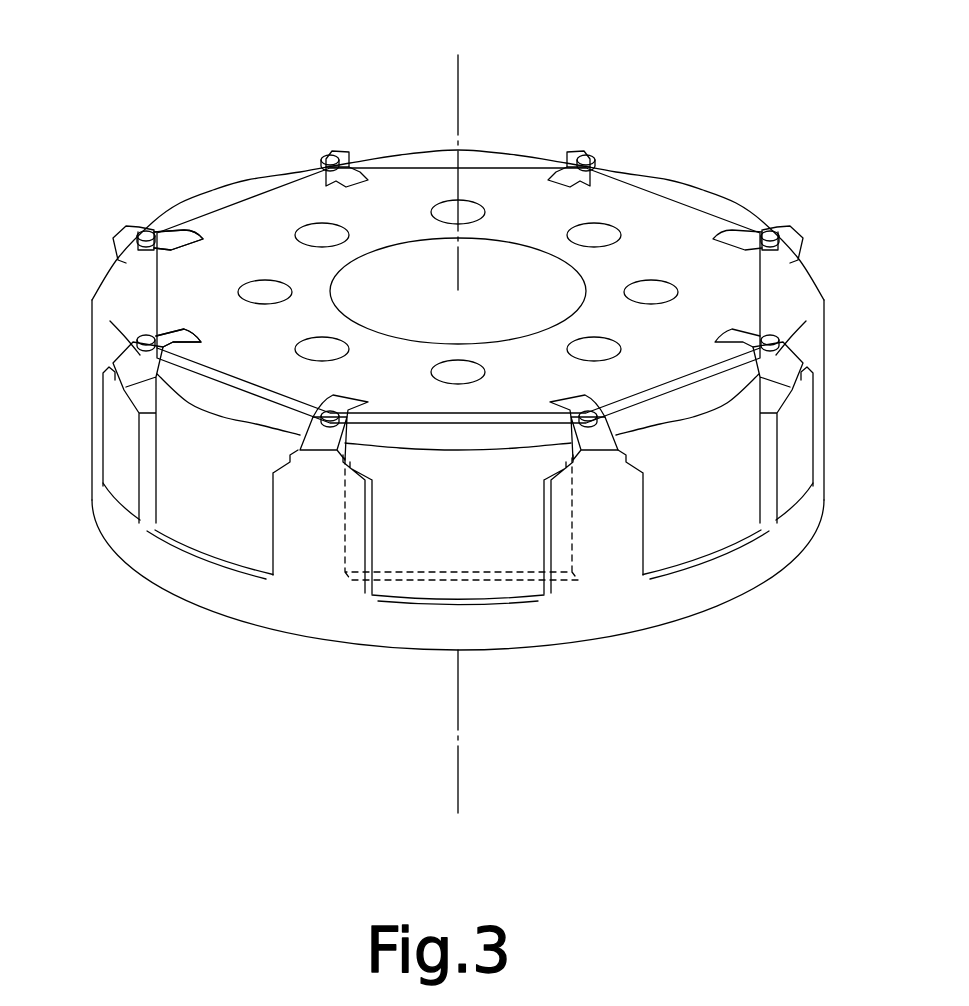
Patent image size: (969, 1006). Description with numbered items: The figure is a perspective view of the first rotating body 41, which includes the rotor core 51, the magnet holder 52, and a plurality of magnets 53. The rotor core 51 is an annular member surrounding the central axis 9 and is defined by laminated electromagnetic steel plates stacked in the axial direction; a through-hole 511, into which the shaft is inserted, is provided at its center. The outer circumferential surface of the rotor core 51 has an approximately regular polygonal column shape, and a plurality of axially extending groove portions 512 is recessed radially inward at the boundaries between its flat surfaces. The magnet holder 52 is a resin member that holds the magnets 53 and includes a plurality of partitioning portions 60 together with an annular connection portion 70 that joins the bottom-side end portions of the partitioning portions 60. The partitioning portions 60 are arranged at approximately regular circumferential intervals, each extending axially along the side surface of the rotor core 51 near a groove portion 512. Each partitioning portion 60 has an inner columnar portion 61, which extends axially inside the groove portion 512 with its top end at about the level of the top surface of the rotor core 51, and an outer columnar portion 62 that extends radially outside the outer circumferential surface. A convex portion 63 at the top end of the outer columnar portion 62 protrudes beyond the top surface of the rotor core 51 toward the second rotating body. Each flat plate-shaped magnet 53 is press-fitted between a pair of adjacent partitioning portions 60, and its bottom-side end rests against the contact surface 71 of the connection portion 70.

The central axis 9 is at (457, 90).
The first rotating body 41 is at (330, 116).
The rotor core 51 is at (429, 253).
The through-hole 511 is at (523, 296).
The groove portion 512 is at (185, 329).
The magnet holder 52 is at (423, 423).
The magnet 53 is at (197, 490).
The partitioning portion 60 is at (461, 473).
The inner columnar portion 61 is at (296, 452).
The outer columnar portion 62 is at (345, 447).
The convex portion 63 is at (596, 408).
The connection portion 70 is at (706, 595).
The contact surface 71 is at (520, 580).